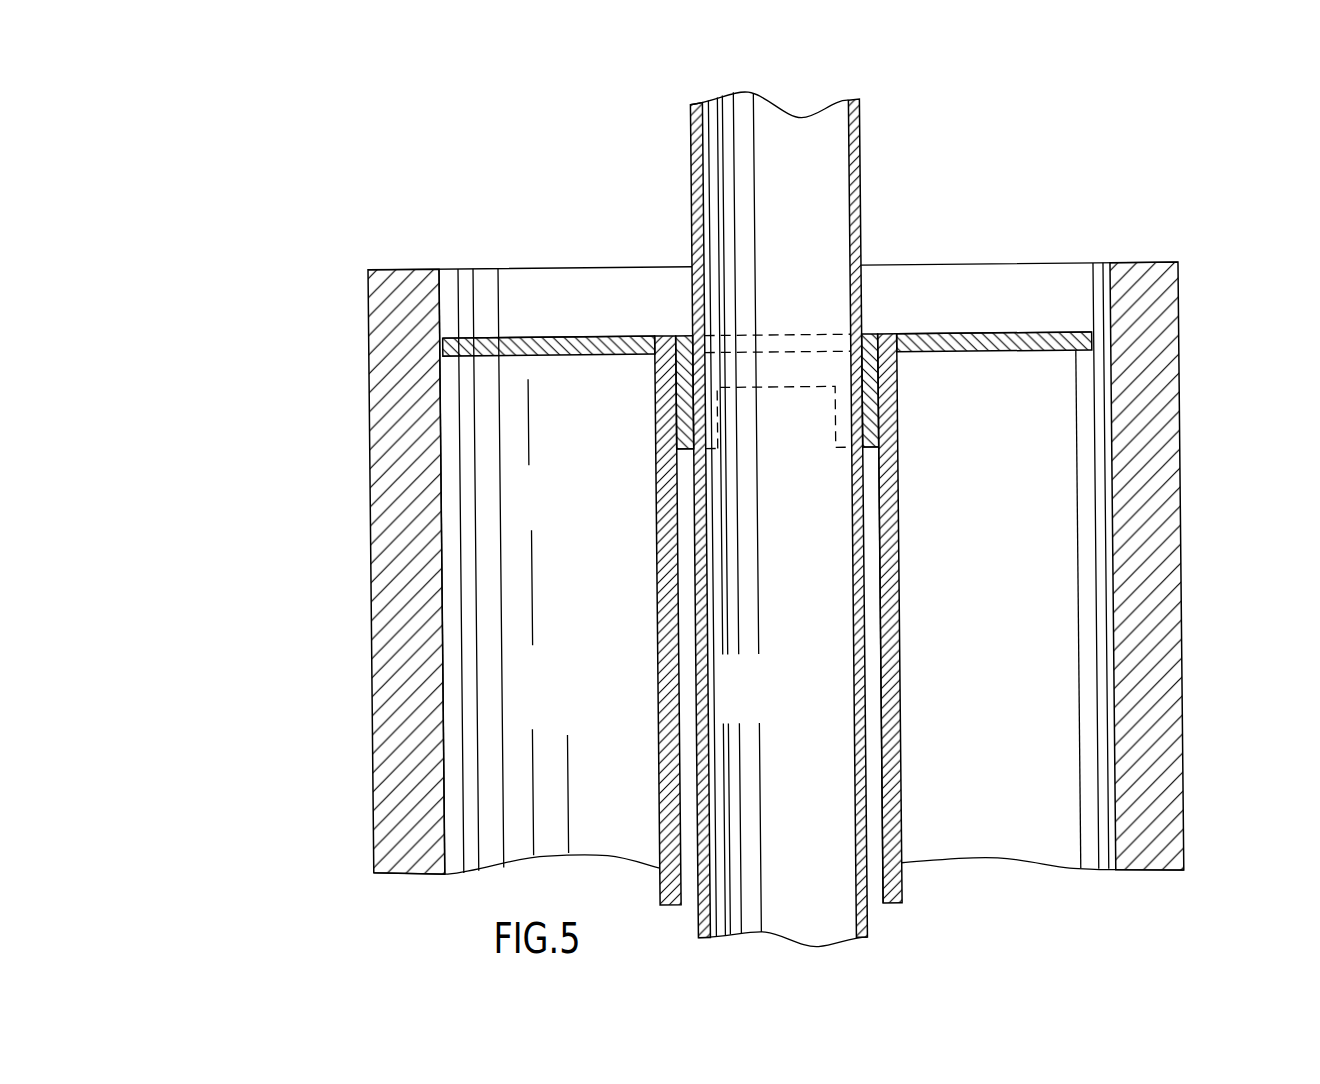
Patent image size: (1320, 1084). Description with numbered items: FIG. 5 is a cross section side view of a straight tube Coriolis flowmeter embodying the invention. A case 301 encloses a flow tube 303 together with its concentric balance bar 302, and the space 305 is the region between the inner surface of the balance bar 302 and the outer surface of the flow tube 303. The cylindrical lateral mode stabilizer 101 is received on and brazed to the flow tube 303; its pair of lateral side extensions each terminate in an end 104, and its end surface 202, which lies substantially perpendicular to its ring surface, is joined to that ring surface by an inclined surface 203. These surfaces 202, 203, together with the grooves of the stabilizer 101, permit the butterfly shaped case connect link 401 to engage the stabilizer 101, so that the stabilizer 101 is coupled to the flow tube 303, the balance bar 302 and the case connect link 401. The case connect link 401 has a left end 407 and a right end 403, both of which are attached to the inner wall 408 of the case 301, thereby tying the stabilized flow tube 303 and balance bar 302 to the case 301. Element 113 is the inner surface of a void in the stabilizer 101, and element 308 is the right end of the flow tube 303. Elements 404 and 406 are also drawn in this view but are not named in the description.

The lateral mode stabilizer 101 is at (675, 420).
The end 104 is at (680, 450).
The inner surface of void 113 is at (777, 388).
The end surface 202 is at (688, 337).
The inclined surface 203 is at (663, 336).
The case 301 is at (372, 695).
The balance bar 302 is at (657, 722).
The flow tube 303 is at (860, 158).
The space 305 is at (880, 790).
The right end of flow tube 308 is at (443, 518).
The case connect link 401 is at (543, 338).
The right end 403 is at (1110, 352).
The partition plate 404 is at (888, 334).
The partition plate 406 is at (662, 336).
The left end 407 is at (444, 355).
The inner wall 408 is at (1113, 573).